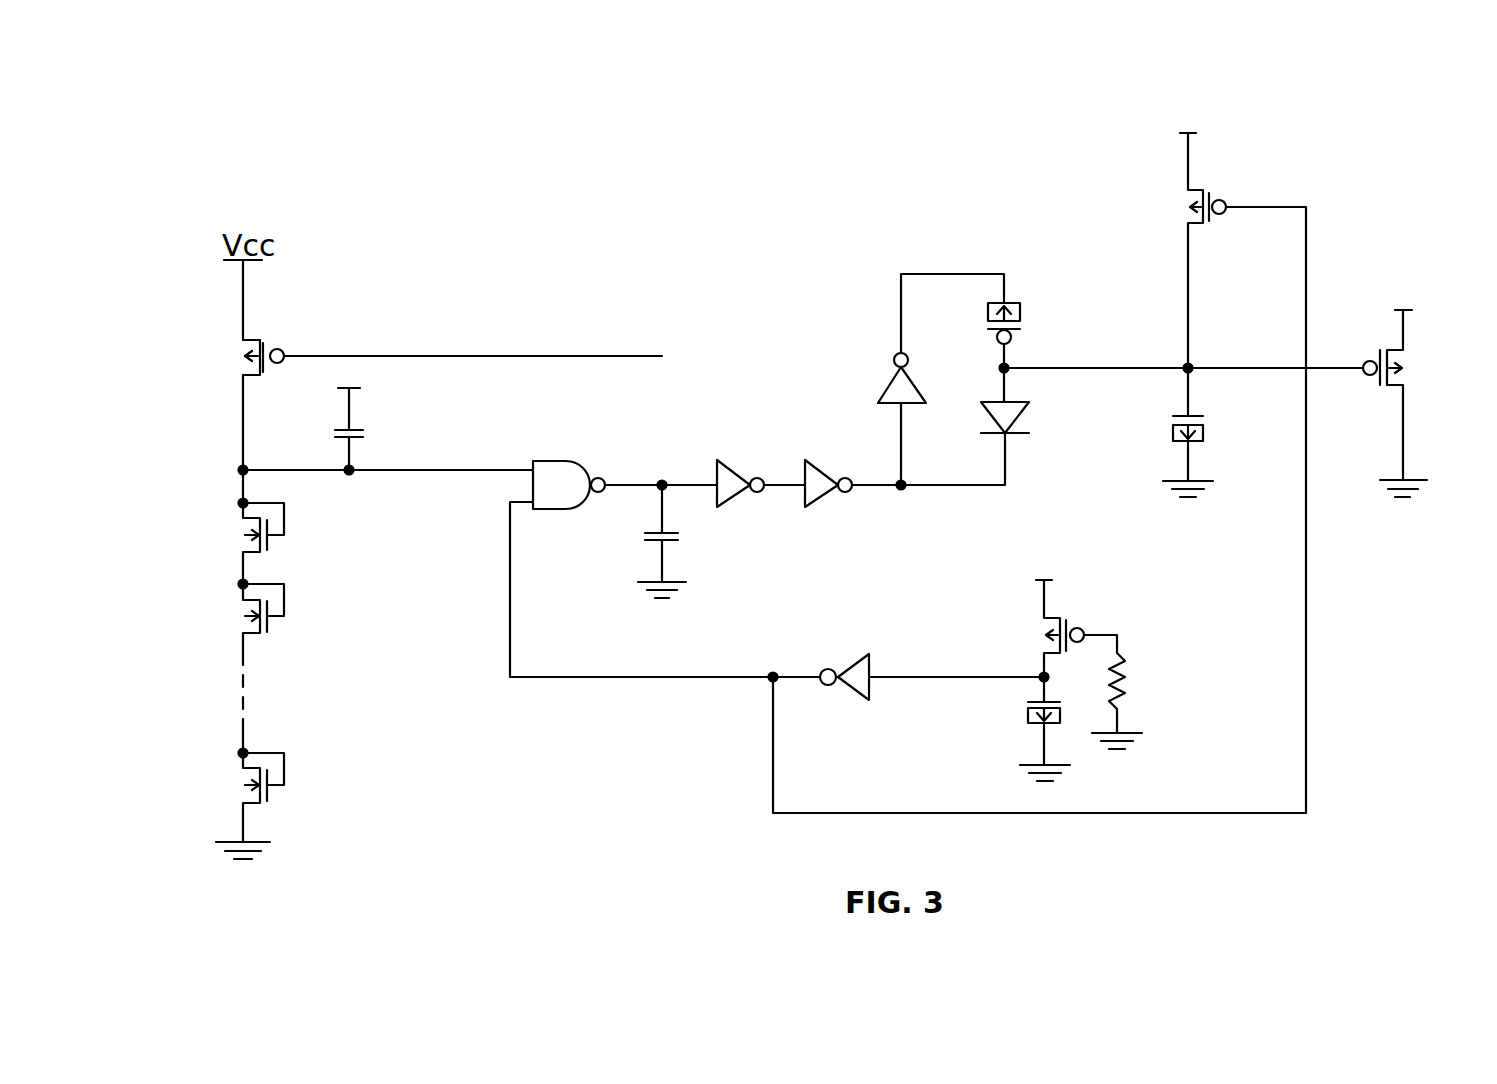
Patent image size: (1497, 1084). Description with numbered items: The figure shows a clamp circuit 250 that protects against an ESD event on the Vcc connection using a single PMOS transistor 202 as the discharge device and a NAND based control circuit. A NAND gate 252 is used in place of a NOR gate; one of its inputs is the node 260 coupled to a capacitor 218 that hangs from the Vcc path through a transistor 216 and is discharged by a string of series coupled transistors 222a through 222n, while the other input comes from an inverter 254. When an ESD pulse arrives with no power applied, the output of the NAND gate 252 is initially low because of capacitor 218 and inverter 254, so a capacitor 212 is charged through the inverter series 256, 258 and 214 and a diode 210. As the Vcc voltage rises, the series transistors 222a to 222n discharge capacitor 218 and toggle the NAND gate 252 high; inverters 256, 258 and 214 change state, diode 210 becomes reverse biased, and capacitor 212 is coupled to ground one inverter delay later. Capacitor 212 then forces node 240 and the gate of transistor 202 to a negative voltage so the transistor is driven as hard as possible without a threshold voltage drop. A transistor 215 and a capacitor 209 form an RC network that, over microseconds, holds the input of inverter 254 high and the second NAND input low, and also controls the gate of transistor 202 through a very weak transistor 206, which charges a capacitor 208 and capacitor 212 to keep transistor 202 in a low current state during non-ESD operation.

The PMOS transistor 202 is at (1405, 360).
The transistor 206 is at (1185, 207).
The capacitor 208 is at (1210, 422).
The capacitor 209 is at (1026, 718).
The diode 210 is at (1024, 416).
The capacitor 212 is at (1024, 312).
The inverter 214 is at (893, 383).
The transistor 215 is at (1040, 633).
The transistor 216 is at (235, 361).
The capacitor 218 is at (339, 429).
The series coupled transistor 222a is at (238, 524).
The series coupled transistor 222n is at (238, 774).
The node 240 is at (1135, 367).
The clamp circuit 250 is at (1352, 600).
The NAND gate 252 is at (548, 460).
The inverter 254 is at (850, 705).
The inverter 256 is at (737, 459).
The inverter 258 is at (826, 459).
The node 260 is at (457, 468).